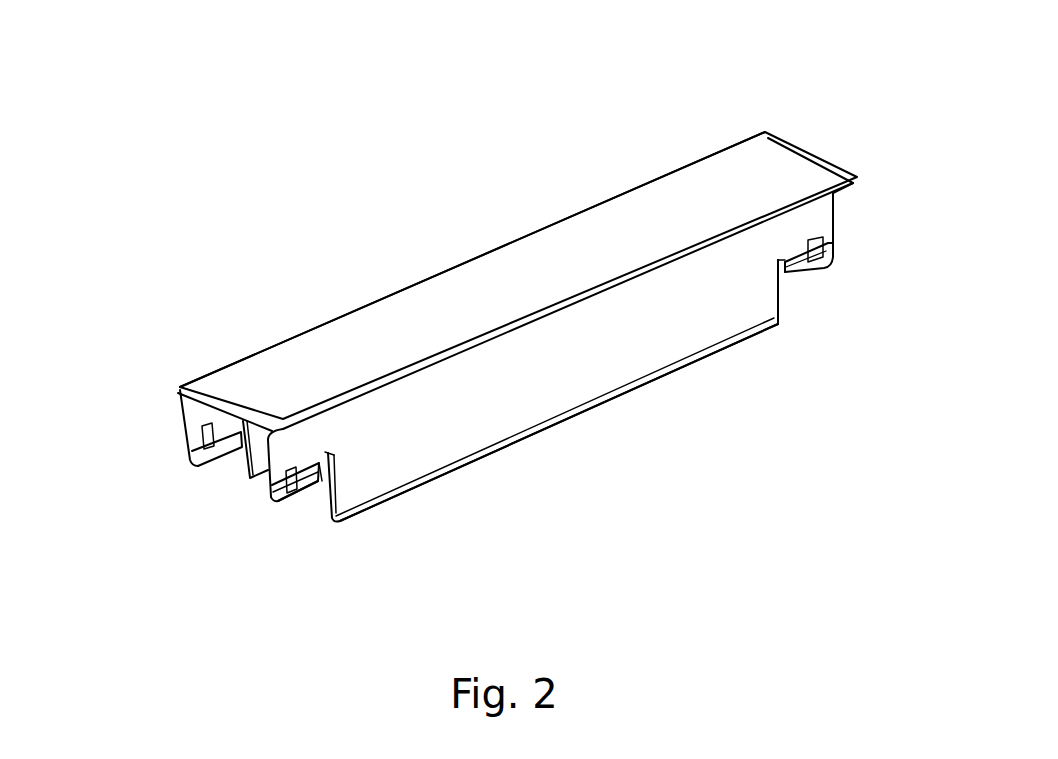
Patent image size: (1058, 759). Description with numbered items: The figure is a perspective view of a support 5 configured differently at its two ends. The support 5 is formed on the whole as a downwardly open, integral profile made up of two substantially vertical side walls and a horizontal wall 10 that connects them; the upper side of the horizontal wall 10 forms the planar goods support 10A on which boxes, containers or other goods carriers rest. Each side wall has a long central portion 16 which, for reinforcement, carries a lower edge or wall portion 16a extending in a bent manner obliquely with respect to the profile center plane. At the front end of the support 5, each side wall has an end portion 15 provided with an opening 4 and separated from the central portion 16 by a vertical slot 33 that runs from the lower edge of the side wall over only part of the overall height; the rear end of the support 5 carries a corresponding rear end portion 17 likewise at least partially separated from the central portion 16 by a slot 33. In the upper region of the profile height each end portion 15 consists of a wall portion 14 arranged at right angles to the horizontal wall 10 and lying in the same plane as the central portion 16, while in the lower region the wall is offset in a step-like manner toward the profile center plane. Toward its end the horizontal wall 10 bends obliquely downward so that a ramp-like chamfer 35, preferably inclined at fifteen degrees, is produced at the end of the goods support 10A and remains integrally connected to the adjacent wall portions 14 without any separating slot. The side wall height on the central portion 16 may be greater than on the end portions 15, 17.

The support 5 is at (405, 259).
The horizontal wall 10 is at (517, 244).
The goods support 10A is at (598, 236).
The central portion 16 is at (519, 375).
The lower edge or wall portion 16a is at (454, 478).
The ramp-like chamfer 35 is at (212, 405).
The wall portion 14 is at (203, 413).
The opening 4 is at (288, 498).
The vertical slot 33 is at (325, 472).
The rear end portion 17 is at (817, 283).
The end portion 15 is at (302, 498).